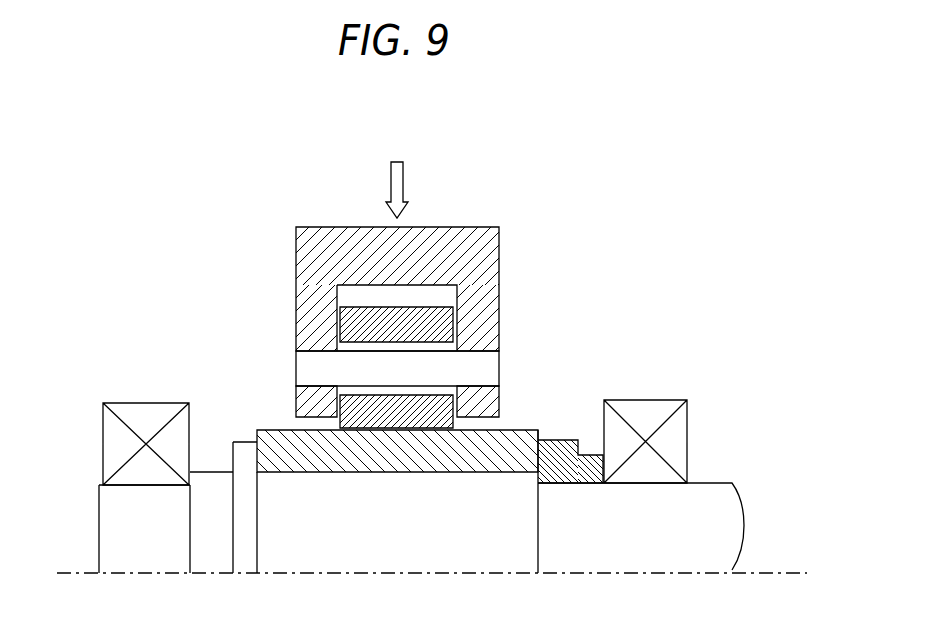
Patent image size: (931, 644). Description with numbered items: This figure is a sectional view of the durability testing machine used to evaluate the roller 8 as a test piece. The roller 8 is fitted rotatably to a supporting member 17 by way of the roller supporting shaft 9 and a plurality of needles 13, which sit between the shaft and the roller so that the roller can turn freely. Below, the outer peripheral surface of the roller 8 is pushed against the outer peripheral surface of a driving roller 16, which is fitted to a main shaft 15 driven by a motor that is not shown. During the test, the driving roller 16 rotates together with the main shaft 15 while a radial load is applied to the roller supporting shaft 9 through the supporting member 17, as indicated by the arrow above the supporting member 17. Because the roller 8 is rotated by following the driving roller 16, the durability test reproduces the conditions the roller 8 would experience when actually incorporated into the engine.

The roller 8 is at (362, 323).
The roller supporting shaft 9 is at (448, 370).
The needles 13 is at (338, 346).
The main shaft 15 is at (385, 543).
The driving roller 16 is at (272, 433).
The supporting member 17 is at (480, 256).